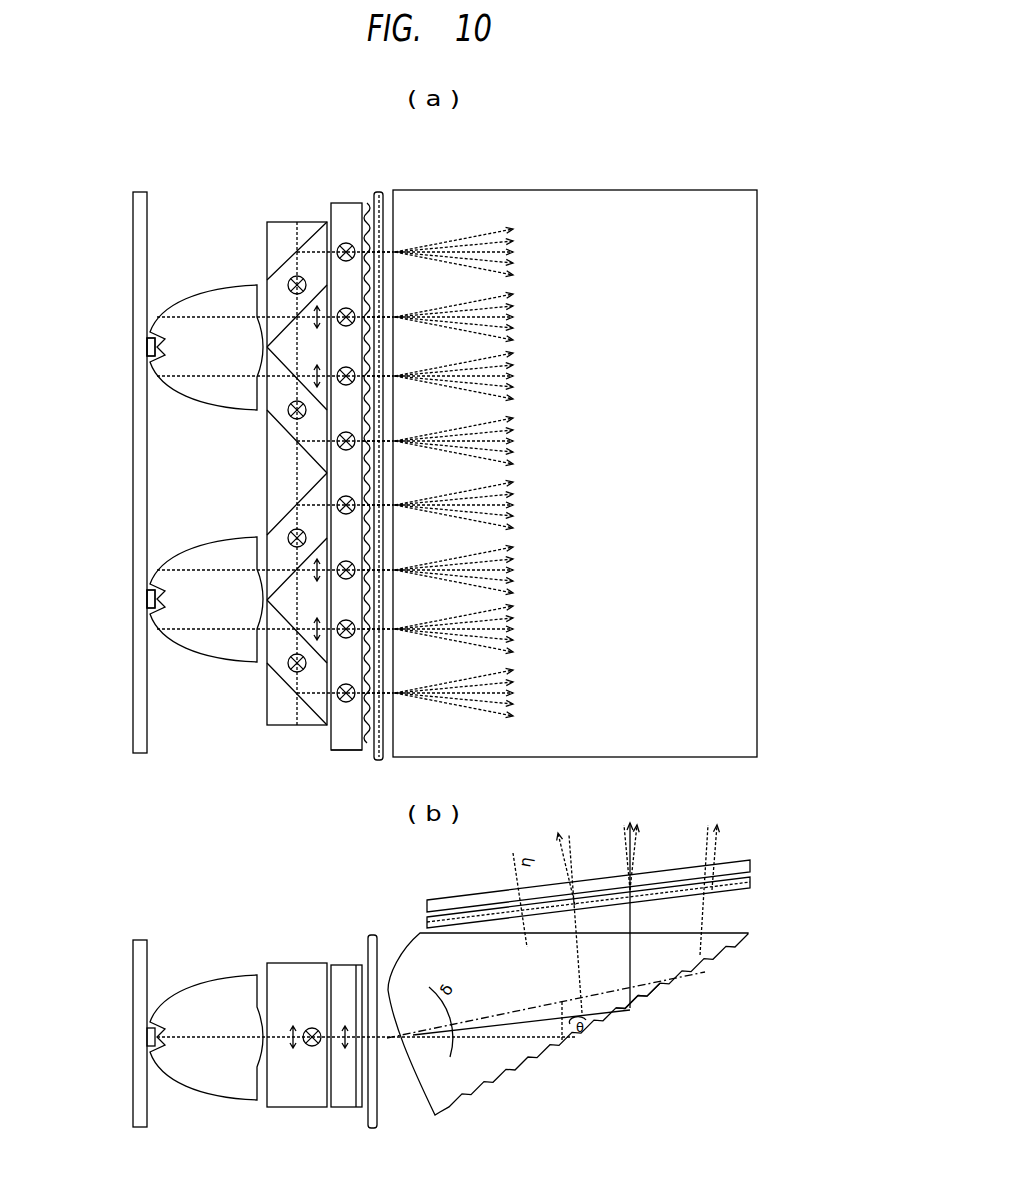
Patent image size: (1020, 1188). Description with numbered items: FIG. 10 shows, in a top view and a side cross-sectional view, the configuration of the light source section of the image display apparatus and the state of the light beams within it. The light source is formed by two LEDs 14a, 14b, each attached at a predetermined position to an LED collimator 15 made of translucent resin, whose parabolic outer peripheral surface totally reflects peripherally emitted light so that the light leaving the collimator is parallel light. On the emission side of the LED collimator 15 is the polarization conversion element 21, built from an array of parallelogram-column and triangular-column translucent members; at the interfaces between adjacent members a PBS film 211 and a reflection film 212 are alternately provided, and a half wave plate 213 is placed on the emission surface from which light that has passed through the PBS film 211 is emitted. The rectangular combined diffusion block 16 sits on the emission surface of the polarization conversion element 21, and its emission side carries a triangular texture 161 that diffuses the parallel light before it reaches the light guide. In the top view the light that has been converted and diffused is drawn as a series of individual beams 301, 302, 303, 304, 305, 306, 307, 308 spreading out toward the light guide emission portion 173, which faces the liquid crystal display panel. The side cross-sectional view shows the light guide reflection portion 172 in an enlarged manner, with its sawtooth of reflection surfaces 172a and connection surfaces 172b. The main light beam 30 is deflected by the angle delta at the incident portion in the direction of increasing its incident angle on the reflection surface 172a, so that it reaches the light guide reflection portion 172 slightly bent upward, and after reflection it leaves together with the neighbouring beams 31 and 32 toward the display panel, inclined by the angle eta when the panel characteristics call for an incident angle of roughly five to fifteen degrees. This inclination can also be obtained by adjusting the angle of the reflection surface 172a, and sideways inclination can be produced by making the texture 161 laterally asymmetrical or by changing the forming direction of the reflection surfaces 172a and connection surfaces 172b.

The LED 14a is at (142, 342).
The LED 14b is at (142, 598).
The LED collimator 15 is at (202, 328).
The combined diffusion block 16 is at (347, 220).
The polarization conversion element 21 is at (302, 230).
The PBS film 211 is at (283, 327).
The reflection film 212 is at (277, 273).
The half wave plate 213 is at (325, 302).
The texture 161 is at (360, 738).
The light guide emission portion 173 is at (690, 315).
The light beam 301 is at (471, 252).
The light beam 302 is at (471, 317).
The light beam 303 is at (471, 376).
The light beam 304 is at (471, 441).
The light beam 305 is at (471, 505).
The light beam 306 is at (471, 570).
The light beam 307 is at (471, 629).
The light beam 308 is at (471, 693).
The central light beam 30 is at (632, 904).
The light beam 31 is at (566, 907).
The light beam 32 is at (709, 878).
The light guide reflection portion 172 is at (733, 1047).
The reflection surface 172a is at (653, 1003).
The connection surface 172b is at (640, 1007).